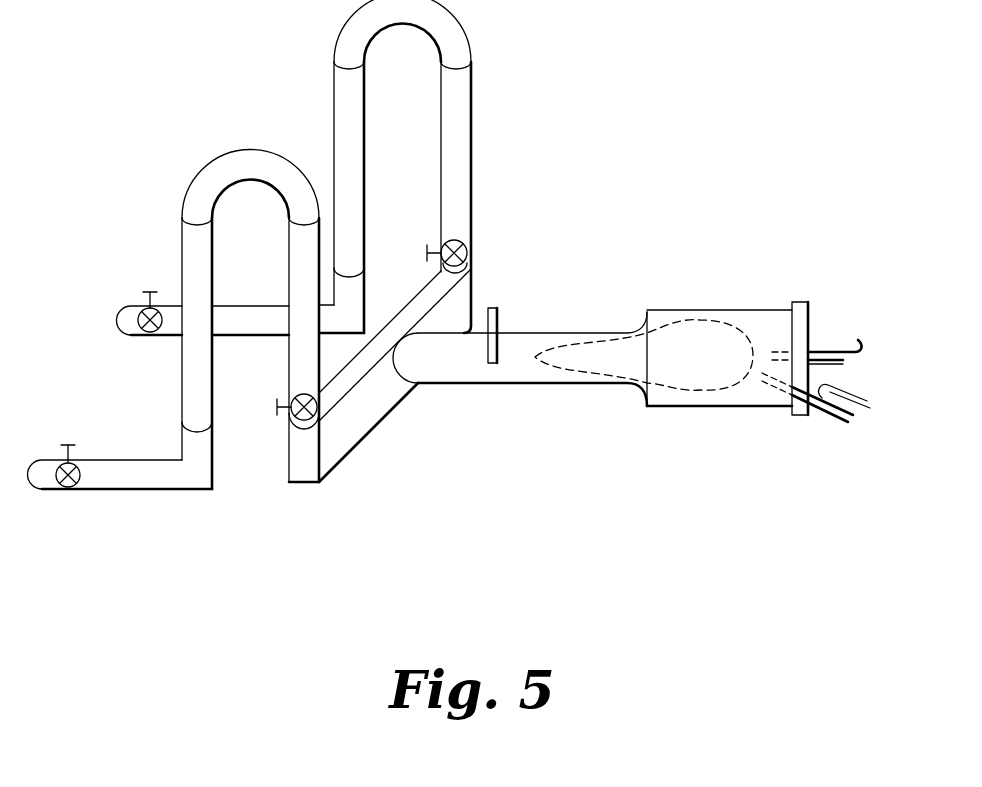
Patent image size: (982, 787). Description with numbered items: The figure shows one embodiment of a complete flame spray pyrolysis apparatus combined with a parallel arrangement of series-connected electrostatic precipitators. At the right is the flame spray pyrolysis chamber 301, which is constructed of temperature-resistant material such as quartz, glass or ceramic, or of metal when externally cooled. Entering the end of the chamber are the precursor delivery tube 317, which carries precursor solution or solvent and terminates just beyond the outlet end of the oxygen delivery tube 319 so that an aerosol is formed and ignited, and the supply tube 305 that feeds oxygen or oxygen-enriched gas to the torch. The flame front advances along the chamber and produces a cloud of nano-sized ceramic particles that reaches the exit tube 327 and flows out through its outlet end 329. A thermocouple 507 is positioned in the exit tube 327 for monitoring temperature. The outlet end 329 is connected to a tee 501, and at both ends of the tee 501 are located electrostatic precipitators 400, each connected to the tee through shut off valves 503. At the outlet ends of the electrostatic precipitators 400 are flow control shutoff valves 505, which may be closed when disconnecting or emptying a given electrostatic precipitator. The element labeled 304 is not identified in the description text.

The electrostatic precipitators 400 is at (472, 133).
The shut off valves 503 is at (470, 249).
The flow control shutoff valves 505 is at (150, 333).
The thermocouple 507 is at (497, 311).
The tee 501 is at (350, 432).
The outlet end 329 is at (403, 360).
The exit tube 327 is at (480, 380).
The flame spray pyrolysis chamber 301 is at (760, 416).
The precursor delivery tube 317 is at (855, 338).
The oxygen delivery tube 319 is at (833, 366).
The supply tube 305 is at (862, 400).
The electrode 304 is at (847, 416).